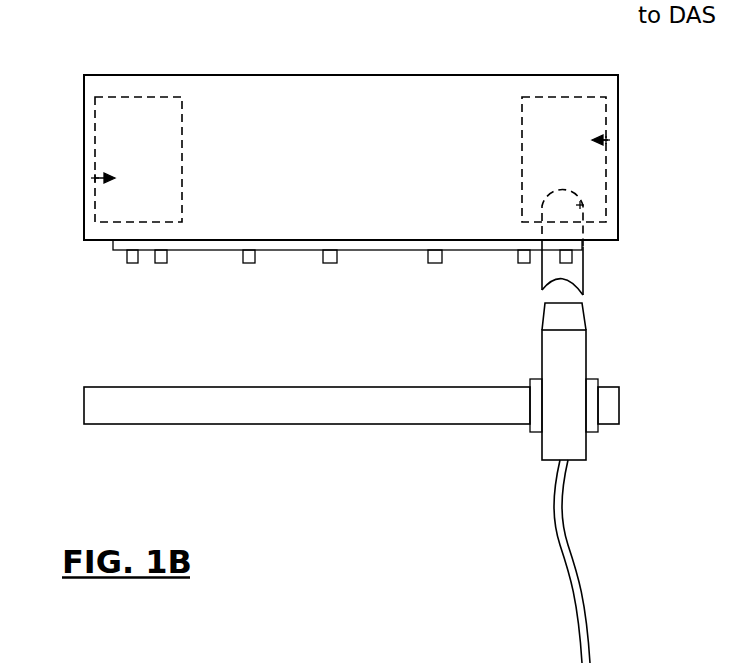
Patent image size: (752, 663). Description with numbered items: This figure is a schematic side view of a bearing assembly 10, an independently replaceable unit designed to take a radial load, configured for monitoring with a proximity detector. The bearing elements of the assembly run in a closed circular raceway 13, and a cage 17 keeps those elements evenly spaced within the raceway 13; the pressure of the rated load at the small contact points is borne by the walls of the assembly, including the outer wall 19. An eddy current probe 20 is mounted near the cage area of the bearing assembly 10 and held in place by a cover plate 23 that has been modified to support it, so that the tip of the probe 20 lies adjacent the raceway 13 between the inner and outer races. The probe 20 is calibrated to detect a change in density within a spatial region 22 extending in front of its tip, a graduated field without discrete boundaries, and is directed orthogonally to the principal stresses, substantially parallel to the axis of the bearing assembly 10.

The bearing assembly 10 is at (203, 60).
The raceway 13 is at (85, 176).
The cage 17 is at (294, 243).
The outer wall 19 is at (342, 164).
The eddy current probe 20 is at (553, 370).
The spatial region 22 is at (584, 205).
The cover plate 23 is at (367, 398).